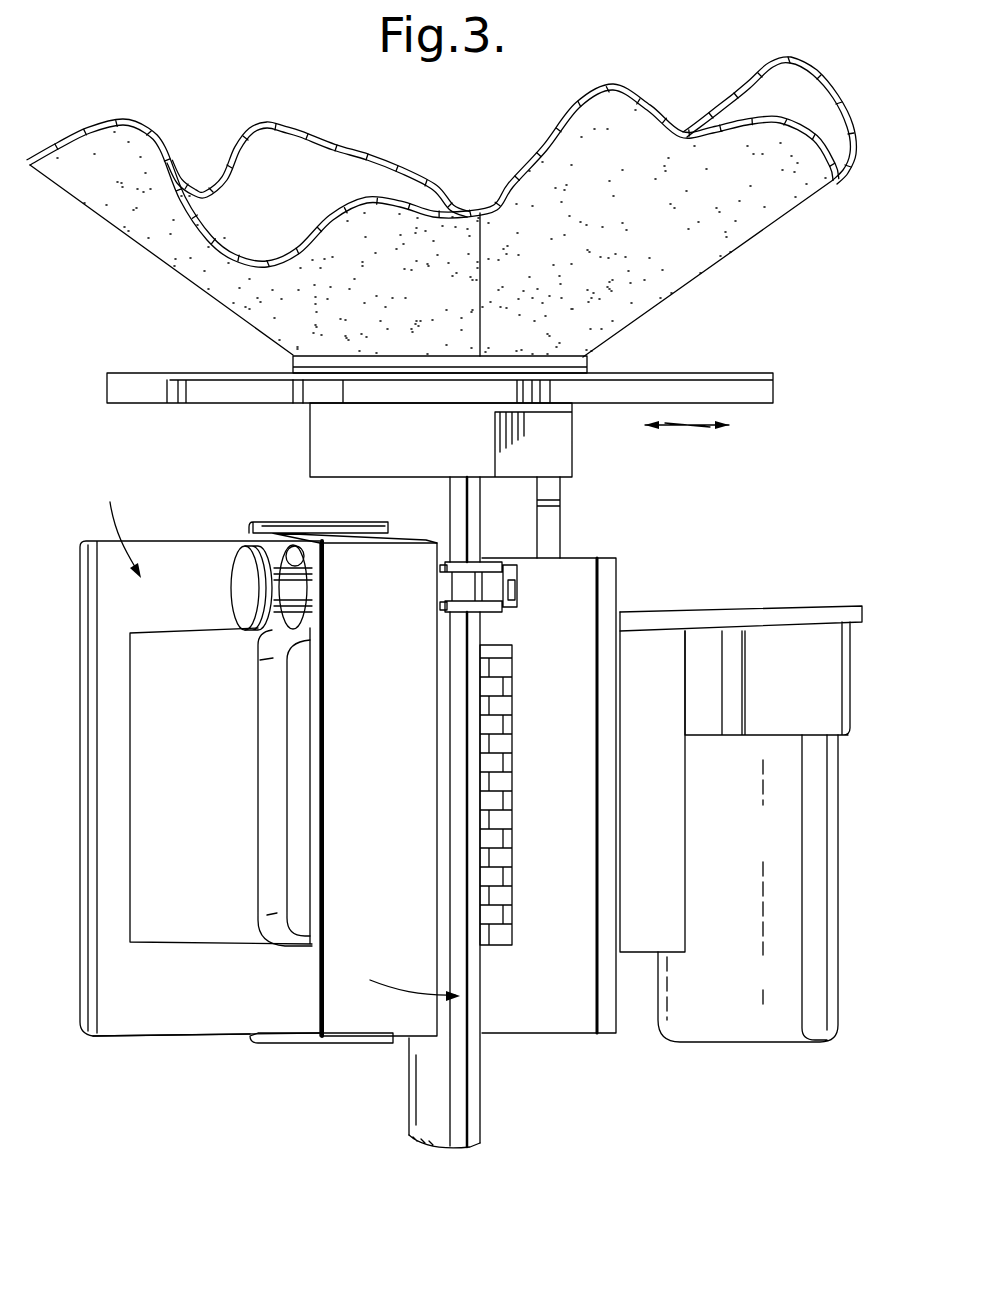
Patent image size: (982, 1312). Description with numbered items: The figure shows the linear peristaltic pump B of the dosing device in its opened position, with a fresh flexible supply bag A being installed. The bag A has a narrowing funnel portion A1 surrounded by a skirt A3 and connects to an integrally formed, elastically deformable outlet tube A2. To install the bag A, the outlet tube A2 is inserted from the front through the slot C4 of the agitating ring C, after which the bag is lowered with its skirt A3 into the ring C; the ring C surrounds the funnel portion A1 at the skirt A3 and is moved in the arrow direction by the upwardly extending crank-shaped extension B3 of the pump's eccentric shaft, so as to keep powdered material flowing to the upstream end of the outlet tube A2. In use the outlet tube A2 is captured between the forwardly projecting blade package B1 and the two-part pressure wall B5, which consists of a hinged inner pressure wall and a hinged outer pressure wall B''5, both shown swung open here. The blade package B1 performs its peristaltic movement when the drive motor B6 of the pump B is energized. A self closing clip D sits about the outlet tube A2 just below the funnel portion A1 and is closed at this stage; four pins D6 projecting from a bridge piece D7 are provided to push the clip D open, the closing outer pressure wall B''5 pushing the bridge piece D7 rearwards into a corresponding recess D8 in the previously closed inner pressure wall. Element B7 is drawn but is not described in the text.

The flexible supply bag A is at (790, 250).
The funnel portion A1 is at (682, 265).
The outlet tube A2 is at (470, 1095).
The skirt A3 is at (337, 433).
The linear peristaltic pump B is at (586, 778).
The blade package B1 is at (503, 720).
The crank-shaped extension B3 is at (555, 490).
The pressure wall B5 is at (352, 1025).
The outer pressure wall B''5 is at (171, 1058).
The drive motor B6 is at (755, 1017).
The bearing bracket B7 is at (518, 590).
The agitating ring C is at (148, 408).
The slot C4 is at (300, 387).
The self closing clip D is at (485, 580).
The pins D6 is at (320, 613).
The bridge piece D7 is at (240, 586).
The recess D8 is at (298, 556).